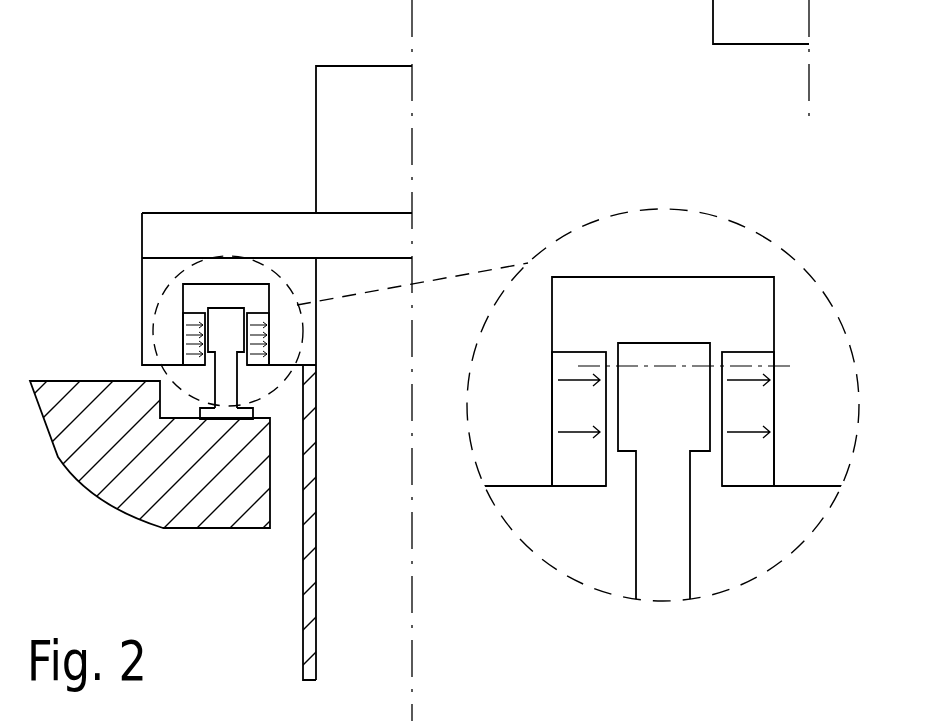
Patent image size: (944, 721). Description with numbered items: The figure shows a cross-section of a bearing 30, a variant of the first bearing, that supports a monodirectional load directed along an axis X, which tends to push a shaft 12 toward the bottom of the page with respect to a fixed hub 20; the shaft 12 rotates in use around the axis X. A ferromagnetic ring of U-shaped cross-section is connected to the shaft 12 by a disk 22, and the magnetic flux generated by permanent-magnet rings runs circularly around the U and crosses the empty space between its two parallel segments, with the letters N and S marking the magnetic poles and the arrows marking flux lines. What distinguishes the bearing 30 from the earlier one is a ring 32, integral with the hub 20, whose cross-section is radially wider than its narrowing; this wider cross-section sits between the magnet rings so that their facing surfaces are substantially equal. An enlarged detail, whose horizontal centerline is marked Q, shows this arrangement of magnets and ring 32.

The bearing 30 is at (242, 364).
The shaft 12 is at (316, 97).
The disk 22 is at (294, 216).
The ring 32 is at (207, 390).
The hub 20 is at (107, 494).
The center axis of magnets Q is at (594, 364).
The axis X is at (415, 13).